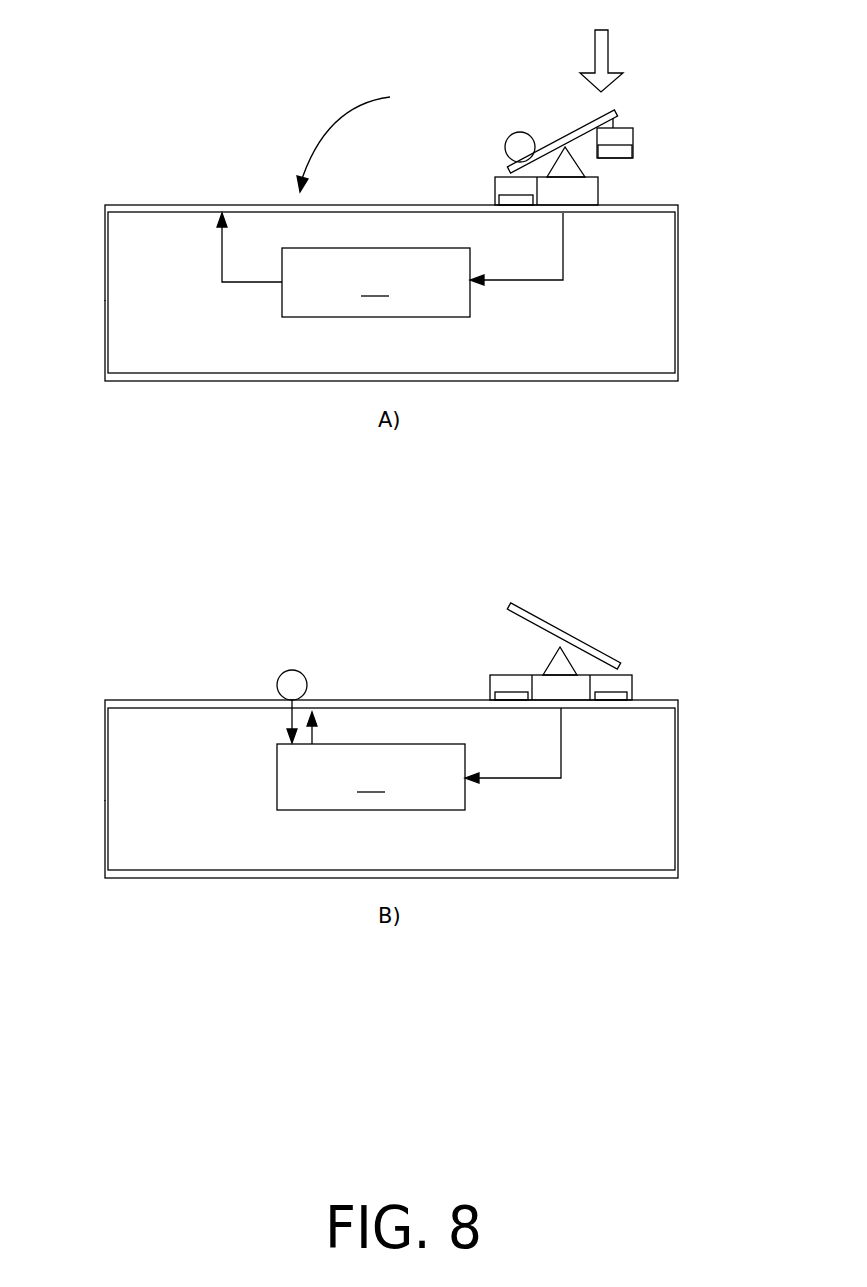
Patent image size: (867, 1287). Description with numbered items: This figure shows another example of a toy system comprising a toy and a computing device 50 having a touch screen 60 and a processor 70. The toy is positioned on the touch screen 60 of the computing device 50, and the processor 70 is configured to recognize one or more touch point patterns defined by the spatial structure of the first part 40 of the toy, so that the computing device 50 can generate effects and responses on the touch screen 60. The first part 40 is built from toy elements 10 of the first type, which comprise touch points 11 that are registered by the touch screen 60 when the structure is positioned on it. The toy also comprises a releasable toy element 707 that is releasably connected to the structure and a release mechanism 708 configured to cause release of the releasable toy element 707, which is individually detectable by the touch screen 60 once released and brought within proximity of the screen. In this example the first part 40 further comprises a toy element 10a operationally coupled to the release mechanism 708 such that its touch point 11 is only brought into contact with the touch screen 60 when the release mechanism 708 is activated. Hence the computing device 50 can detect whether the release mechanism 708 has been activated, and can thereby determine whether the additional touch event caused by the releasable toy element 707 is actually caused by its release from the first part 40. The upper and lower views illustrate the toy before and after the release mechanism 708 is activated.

The toy element 10 is at (507, 187).
The toy element 10a is at (635, 140).
The touch point 11 is at (617, 157).
The first part 40 is at (651, 92).
The computing device 50 is at (653, 302).
The touch screen 60 is at (152, 205).
The processor 70 is at (390, 511).
The releasable toy element 707 is at (518, 132).
The release mechanism 708 is at (572, 133).